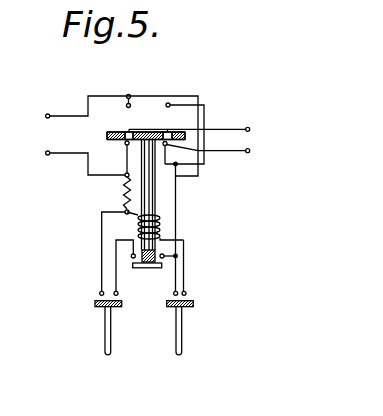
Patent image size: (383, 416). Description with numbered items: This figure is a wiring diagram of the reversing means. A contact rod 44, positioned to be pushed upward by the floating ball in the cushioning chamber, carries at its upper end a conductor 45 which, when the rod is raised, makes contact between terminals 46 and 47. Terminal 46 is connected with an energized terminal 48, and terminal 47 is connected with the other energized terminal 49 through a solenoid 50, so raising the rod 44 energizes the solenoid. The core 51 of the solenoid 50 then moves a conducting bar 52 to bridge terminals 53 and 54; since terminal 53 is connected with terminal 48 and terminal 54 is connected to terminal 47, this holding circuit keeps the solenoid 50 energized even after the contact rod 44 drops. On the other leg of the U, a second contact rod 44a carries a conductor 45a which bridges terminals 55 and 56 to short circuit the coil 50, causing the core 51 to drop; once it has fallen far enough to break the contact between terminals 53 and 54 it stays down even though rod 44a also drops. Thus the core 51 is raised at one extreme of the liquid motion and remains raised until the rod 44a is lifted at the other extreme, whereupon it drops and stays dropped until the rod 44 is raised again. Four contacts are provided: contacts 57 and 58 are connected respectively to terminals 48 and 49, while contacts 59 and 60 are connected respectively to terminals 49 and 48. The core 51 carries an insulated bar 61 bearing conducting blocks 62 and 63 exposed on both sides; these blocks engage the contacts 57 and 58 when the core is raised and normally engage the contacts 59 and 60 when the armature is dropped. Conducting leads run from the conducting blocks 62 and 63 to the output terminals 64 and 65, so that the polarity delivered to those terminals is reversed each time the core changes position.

The contact rod 44 is at (182, 333).
The contact rod 44a is at (104, 348).
The conductor 45 is at (194, 304).
The conductor 45a is at (94, 302).
The terminal 46 is at (177, 268).
The terminal 47 is at (185, 280).
The terminal 48 is at (53, 100).
The terminal 49 is at (46, 155).
The solenoid 50 is at (160, 219).
The core 51 is at (150, 197).
The conducting bar 52 is at (144, 268).
The terminal 53 is at (164, 254).
The terminal 54 is at (131, 256).
The terminal 55 is at (100, 293).
The terminal 56 is at (118, 295).
The contact 57 is at (130, 104).
The contact 58 is at (170, 104).
The contact 59 is at (126, 145).
The contact 60 is at (167, 146).
The insulated bar 61 is at (106, 134).
The conducting block 62 is at (128, 131).
The conducting block 63 is at (168, 131).
The terminal 64 is at (249, 128).
The terminal 65 is at (257, 146).